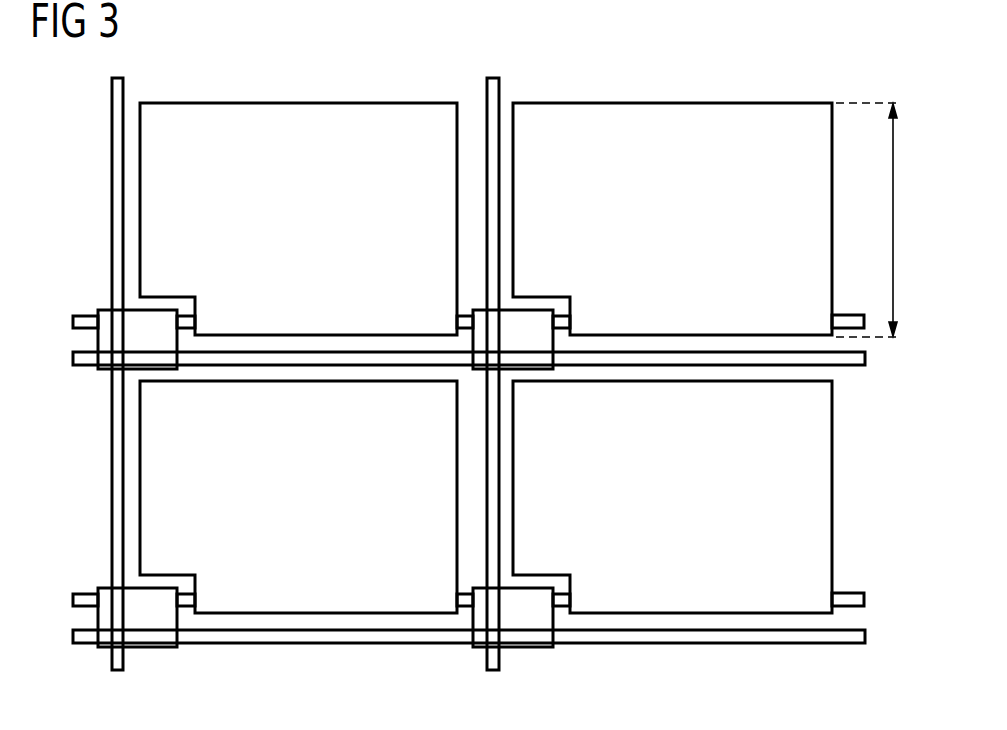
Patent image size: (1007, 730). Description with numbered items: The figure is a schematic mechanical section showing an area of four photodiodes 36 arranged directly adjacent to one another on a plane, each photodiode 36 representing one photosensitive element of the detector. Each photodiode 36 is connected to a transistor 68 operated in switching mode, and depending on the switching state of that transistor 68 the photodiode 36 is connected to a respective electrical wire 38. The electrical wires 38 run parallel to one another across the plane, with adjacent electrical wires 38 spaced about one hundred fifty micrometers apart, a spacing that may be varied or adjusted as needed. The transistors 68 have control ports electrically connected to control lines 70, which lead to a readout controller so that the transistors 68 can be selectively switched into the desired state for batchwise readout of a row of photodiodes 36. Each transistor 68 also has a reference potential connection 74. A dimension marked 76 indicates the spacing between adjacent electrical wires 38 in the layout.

The photodiode 36 is at (312, 237).
The electrical wire 38 is at (852, 366).
The transistor 68 is at (162, 325).
The control line 70 is at (125, 85).
The reference potential connection 74 is at (86, 321).
The pixel pitch dimension 76 is at (895, 213).